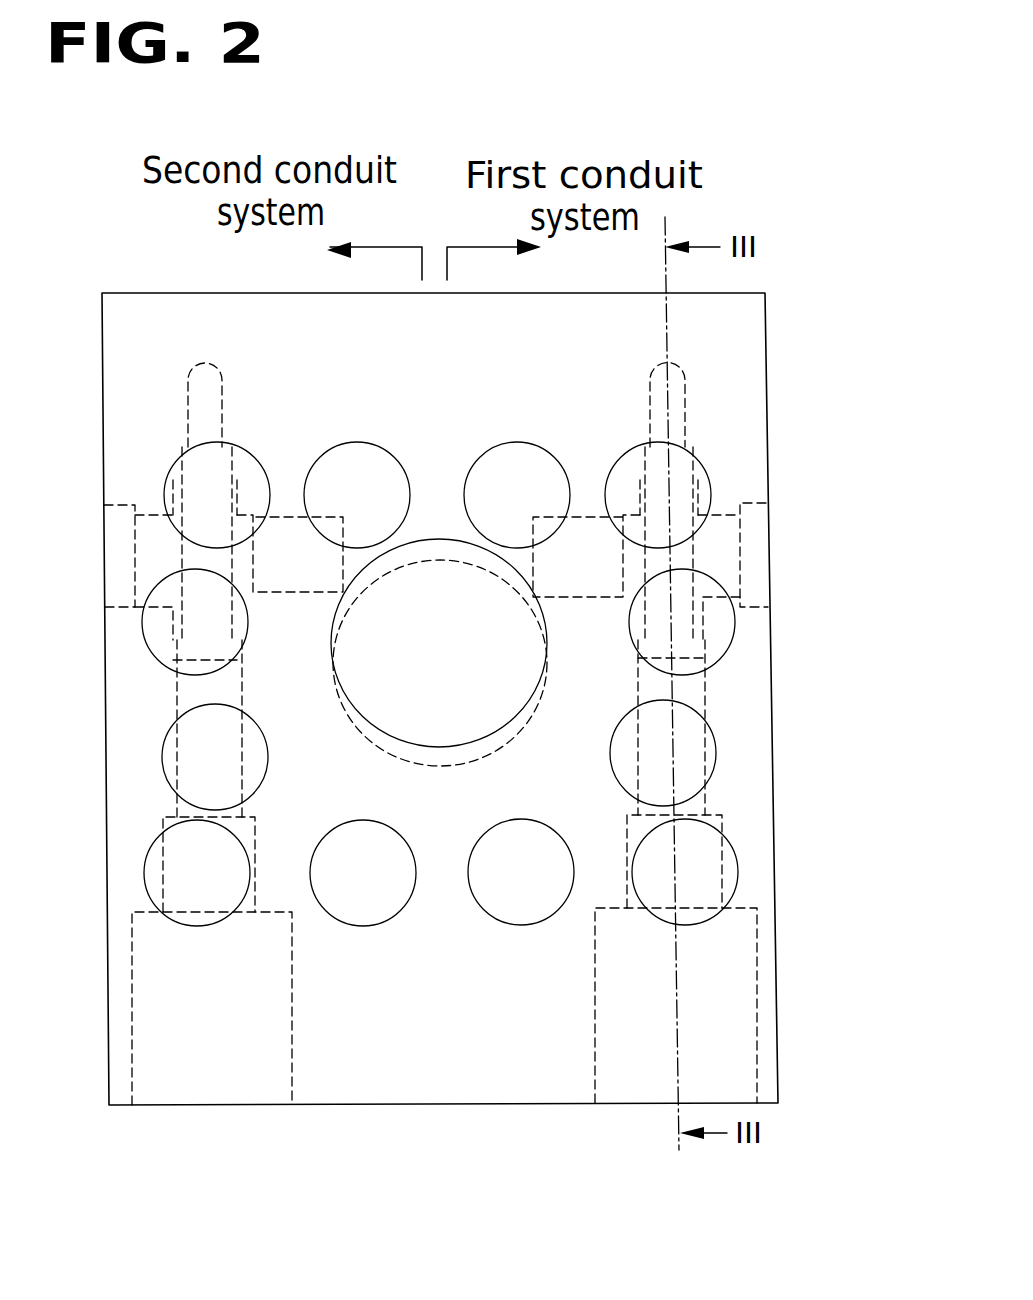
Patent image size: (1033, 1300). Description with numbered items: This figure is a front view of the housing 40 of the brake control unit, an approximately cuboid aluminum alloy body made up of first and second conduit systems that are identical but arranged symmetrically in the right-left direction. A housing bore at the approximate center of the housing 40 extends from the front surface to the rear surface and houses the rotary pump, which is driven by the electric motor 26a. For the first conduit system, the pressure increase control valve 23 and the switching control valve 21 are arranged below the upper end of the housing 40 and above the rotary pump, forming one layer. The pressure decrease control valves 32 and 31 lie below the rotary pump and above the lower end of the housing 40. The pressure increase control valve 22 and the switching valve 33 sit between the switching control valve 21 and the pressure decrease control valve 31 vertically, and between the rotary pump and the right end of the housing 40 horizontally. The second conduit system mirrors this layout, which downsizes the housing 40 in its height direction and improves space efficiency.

The switching control valve 21 is at (235, 450).
The pressure increase control valve 22 is at (245, 640).
The pressure increase control valve 23 is at (355, 442).
The electric motor 26a is at (433, 747).
The pressure decrease control valve 31 is at (233, 912).
The pressure decrease control valve 32 is at (366, 821).
The switching valve 33 is at (268, 745).
The housing 40 is at (518, 1103).